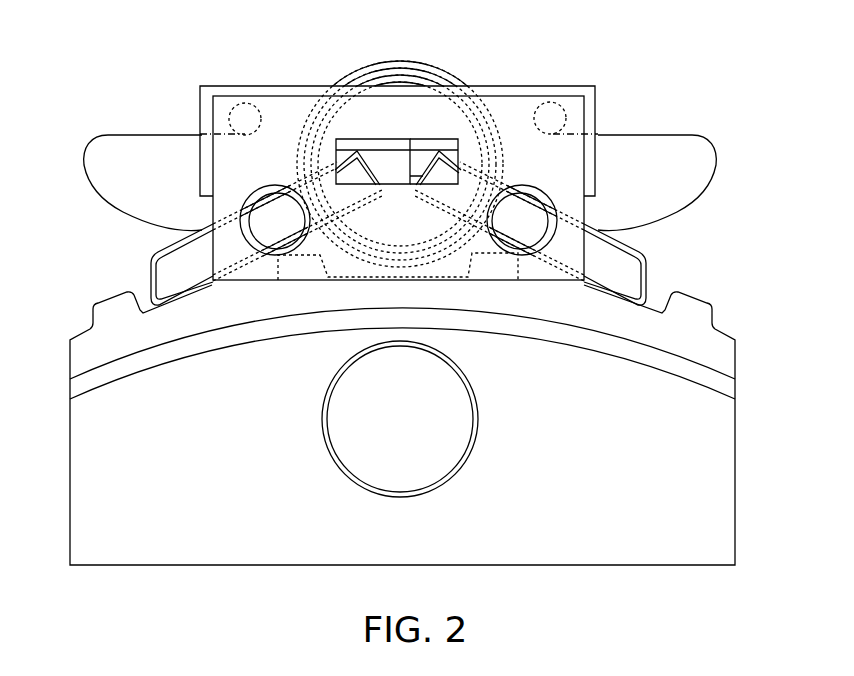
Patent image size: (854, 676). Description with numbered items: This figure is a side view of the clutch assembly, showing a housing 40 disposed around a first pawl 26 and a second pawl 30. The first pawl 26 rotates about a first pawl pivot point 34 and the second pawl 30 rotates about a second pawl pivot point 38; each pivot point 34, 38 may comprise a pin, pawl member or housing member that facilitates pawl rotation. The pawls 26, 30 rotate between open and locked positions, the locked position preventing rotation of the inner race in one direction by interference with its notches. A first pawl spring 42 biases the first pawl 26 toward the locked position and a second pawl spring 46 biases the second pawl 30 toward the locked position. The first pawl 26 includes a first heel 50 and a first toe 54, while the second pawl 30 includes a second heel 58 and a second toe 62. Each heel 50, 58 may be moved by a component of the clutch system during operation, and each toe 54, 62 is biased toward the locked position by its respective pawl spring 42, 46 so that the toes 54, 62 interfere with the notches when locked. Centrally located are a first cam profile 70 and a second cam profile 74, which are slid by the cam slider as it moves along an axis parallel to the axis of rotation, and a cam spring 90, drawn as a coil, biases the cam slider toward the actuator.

The first pawl 26 is at (205, 250).
The second pawl 30 is at (590, 250).
The first pawl pivot point 34 is at (275, 220).
The second pawl pivot point 38 is at (520, 220).
The housing 40 is at (596, 104).
The first pawl spring 42 is at (103, 138).
The second pawl spring 46 is at (716, 158).
The first heel 50 is at (348, 170).
The first toe 54 is at (162, 297).
The second heel 58 is at (450, 170).
The second toe 62 is at (637, 297).
The first cam profile 70 is at (385, 160).
The second cam profile 74 is at (423, 160).
The cam spring 90 is at (362, 78).